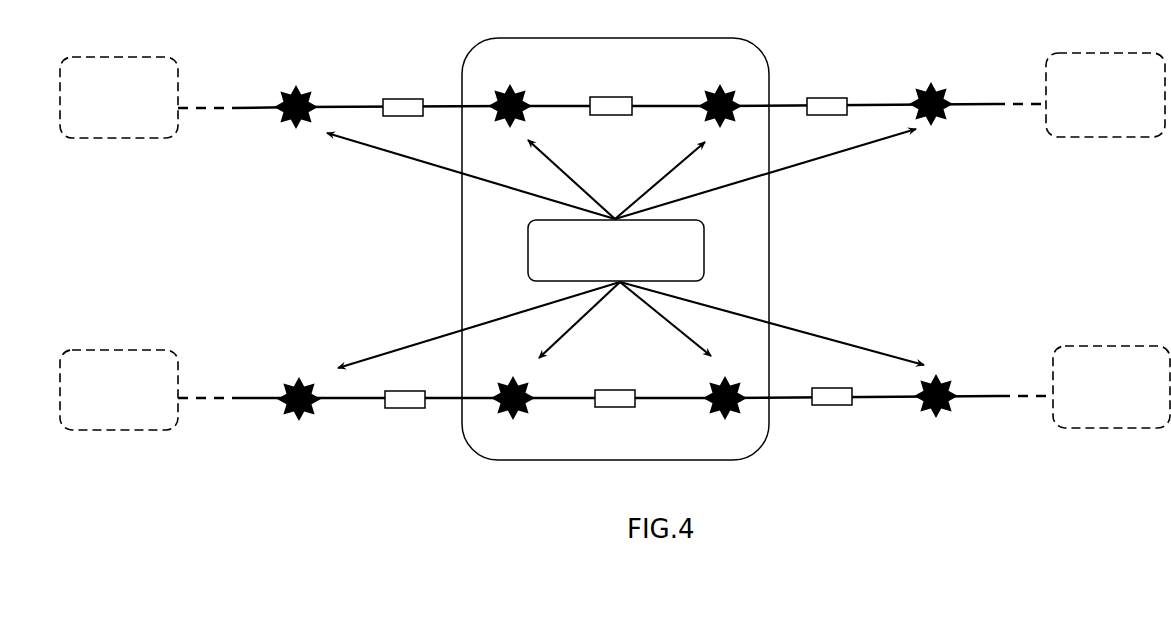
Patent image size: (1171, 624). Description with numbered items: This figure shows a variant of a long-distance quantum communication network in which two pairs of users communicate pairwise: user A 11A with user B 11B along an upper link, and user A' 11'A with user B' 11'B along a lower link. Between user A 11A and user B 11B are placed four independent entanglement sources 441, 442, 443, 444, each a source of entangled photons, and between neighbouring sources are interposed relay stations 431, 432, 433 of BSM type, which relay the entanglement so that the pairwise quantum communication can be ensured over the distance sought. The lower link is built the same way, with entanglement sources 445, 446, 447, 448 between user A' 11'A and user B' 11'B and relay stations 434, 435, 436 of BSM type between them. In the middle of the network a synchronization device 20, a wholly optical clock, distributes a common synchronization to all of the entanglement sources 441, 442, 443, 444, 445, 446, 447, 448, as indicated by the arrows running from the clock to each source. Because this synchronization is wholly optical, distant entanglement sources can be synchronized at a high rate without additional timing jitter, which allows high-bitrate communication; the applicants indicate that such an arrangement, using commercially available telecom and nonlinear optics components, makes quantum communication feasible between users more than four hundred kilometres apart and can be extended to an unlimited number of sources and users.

The synchronization device 20 is at (703, 253).
The user A 11A is at (141, 57).
The user B 11B is at (1095, 54).
The user A' 11'A is at (119, 371).
The user B' 11'B is at (1111, 370).
The relay station 431 is at (395, 99).
The relay station 432 is at (605, 115).
The relay station 433 is at (820, 98).
The relay station 434 is at (400, 408).
The relay station 435 is at (603, 390).
The relay station 436 is at (845, 405).
The entanglement source 441 is at (292, 86).
The entanglement source 442 is at (505, 85).
The entanglement source 443 is at (733, 87).
The entanglement source 444 is at (942, 85).
The entanglement source 445 is at (283, 414).
The entanglement source 446 is at (500, 417).
The entanglement source 447 is at (700, 416).
The entanglement source 448 is at (945, 416).